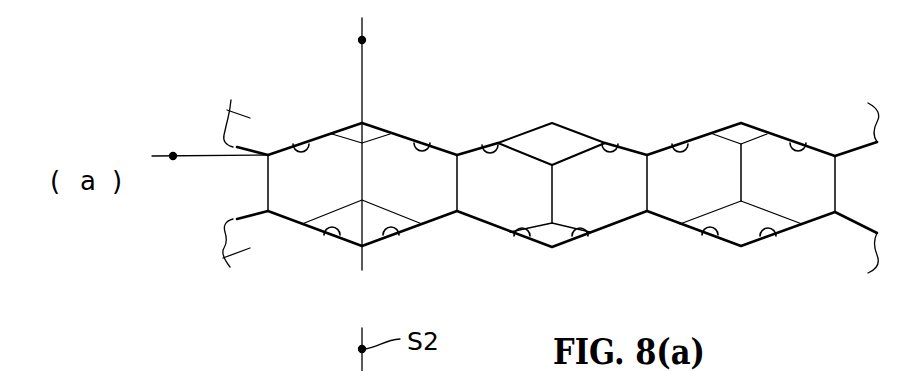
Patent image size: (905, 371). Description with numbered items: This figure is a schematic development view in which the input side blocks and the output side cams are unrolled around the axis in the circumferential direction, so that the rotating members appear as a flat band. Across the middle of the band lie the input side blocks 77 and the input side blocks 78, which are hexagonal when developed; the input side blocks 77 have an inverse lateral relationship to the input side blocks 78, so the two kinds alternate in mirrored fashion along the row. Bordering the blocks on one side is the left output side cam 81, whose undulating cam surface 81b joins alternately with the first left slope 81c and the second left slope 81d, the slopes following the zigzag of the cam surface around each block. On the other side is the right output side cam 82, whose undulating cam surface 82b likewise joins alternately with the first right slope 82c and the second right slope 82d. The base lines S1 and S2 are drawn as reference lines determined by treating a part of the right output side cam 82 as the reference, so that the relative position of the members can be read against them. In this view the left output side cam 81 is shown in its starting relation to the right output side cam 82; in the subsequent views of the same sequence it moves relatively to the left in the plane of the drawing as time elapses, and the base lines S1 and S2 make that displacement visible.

The input side block 77 is at (504, 177).
The input side block 78 is at (616, 189).
The left output side cam 81 is at (489, 255).
The undulating cam surface 81b is at (183, 243).
The first left slope 81c is at (499, 267).
The second left slope 81d is at (606, 267).
The right output side cam 82 is at (489, 110).
The undulating cam surface 82b is at (183, 124).
The first right slope 82c is at (493, 106).
The second right slope 82d is at (613, 105).
The base line S1 is at (210, 175).
The base line S2 is at (399, 139).